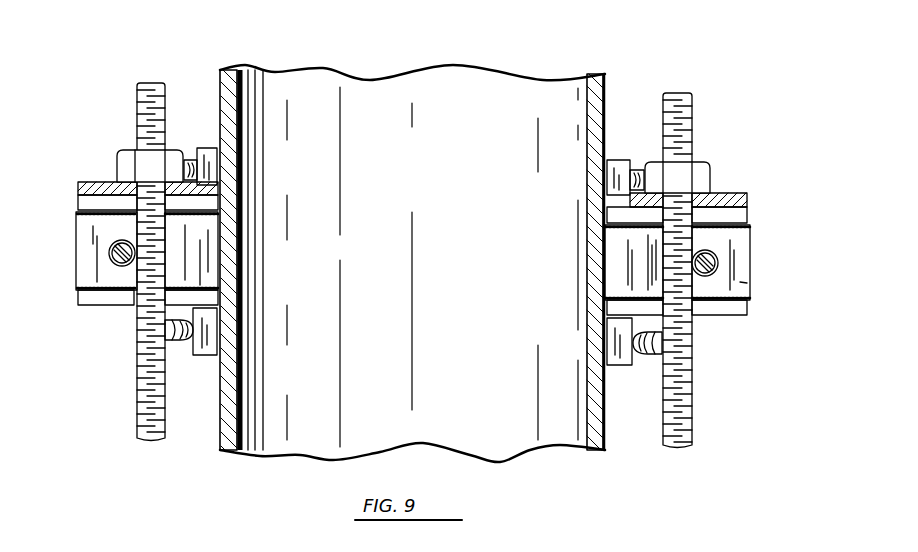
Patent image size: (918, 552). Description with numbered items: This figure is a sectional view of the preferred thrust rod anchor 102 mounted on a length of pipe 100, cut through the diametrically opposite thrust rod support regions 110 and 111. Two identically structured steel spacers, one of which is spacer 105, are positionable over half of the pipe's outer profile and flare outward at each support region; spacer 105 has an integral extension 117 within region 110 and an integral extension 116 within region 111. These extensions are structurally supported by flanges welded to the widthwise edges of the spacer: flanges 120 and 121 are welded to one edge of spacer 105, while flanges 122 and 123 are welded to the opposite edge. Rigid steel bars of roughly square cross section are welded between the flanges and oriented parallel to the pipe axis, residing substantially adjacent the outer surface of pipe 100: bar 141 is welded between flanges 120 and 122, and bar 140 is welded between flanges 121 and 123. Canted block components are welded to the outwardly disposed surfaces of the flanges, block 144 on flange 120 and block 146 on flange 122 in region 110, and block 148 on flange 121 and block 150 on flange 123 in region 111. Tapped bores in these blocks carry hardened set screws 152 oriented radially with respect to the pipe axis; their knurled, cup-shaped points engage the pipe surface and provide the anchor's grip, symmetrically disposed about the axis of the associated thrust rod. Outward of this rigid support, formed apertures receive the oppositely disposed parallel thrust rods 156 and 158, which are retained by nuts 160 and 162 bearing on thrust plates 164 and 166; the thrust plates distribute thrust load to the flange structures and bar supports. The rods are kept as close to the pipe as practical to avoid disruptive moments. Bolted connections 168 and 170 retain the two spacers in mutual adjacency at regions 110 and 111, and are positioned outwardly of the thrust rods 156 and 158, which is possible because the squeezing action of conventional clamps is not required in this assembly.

The pipe 100 is at (543, 105).
The thrust rod anchor 102 is at (68, 148).
The spacer 105 is at (752, 242).
The thrust rod support region 110 is at (131, 228).
The thrust rod support region 111 is at (708, 238).
The integral extension 116 is at (745, 287).
The integral extension 117 is at (84, 239).
The flange 120 is at (84, 204).
The flange 121 is at (745, 214).
The flange 122 is at (92, 302).
The flange 123 is at (730, 314).
The bar 140 is at (620, 268).
The bar 141 is at (200, 266).
The block component 144 is at (212, 150).
The block component 146 is at (216, 360).
The block component 148 is at (615, 165).
The block component 150 is at (612, 372).
The set screw 152 is at (190, 160).
The thrust rod 156 is at (140, 102).
The thrust rod 158 is at (690, 116).
The nut 160 is at (125, 160).
The nut 162 is at (705, 168).
The thrust plate 164 is at (95, 186).
The thrust plate 166 is at (735, 190).
The bolted connection 168 is at (112, 258).
The bolted connection 170 is at (720, 266).